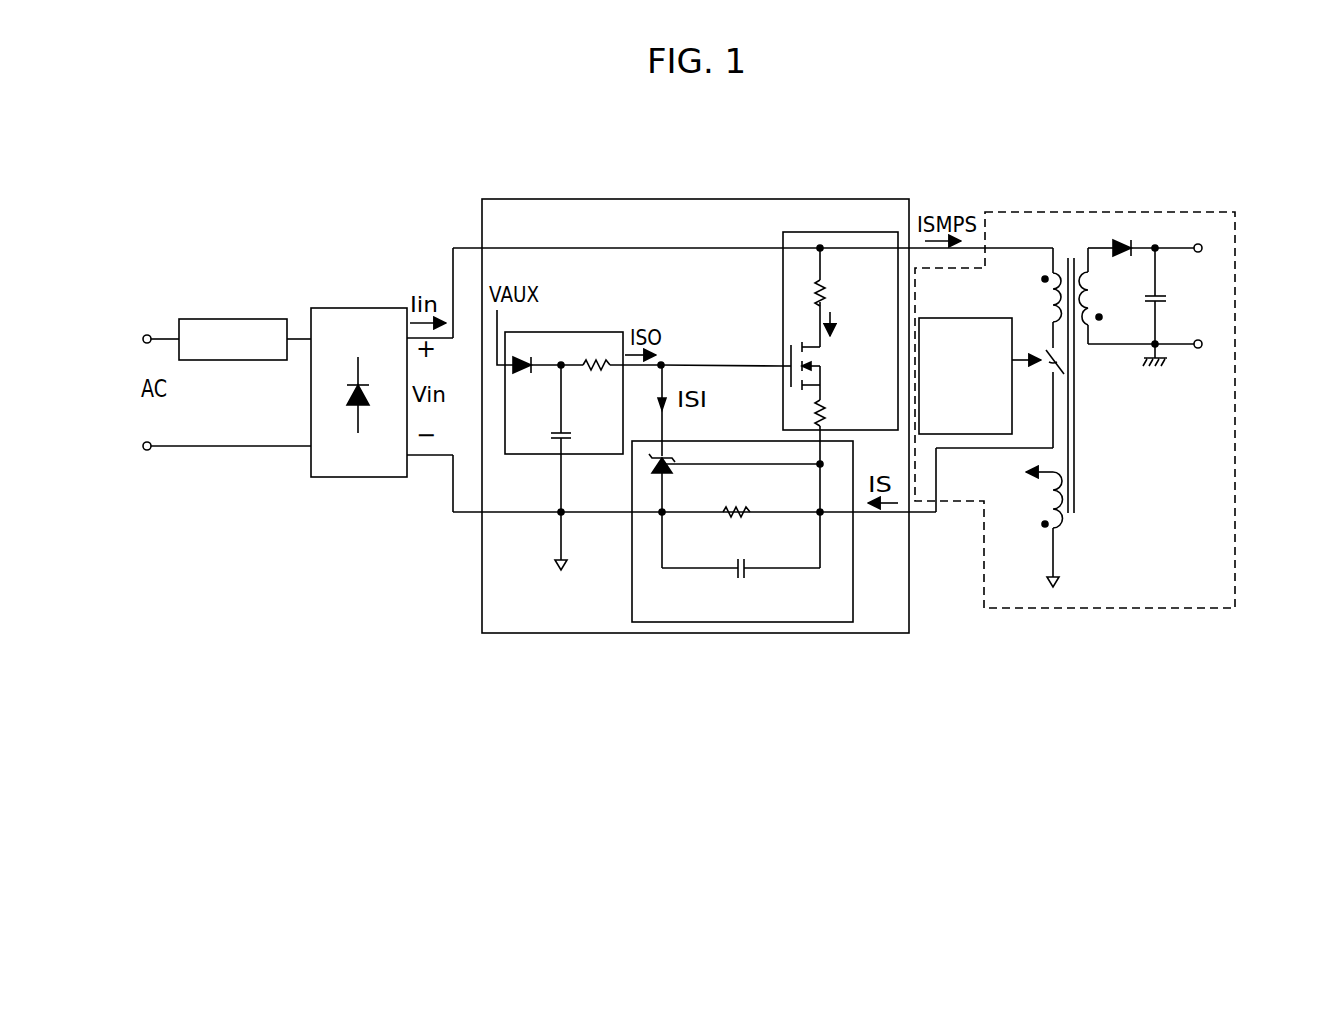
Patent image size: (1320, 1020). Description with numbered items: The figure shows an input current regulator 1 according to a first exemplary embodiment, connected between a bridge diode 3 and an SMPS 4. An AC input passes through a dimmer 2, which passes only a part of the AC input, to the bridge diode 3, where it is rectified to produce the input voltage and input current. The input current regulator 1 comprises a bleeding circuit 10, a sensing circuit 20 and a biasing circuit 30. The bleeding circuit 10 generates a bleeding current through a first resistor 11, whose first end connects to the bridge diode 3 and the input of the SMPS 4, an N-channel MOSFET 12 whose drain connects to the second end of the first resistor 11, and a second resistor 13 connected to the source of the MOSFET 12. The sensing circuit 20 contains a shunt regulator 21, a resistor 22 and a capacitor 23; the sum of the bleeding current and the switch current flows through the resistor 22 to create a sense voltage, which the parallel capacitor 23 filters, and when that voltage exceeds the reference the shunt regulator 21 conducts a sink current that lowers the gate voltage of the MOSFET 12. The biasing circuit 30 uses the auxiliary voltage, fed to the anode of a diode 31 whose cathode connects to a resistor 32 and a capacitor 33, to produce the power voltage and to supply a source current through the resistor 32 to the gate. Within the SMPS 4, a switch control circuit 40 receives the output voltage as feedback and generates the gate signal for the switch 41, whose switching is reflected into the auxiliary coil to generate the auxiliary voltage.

The input current regulator 1 is at (745, 199).
The dimmer 2 is at (255, 319).
The bridge diode 3 is at (375, 308).
The SMPS 4 is at (1075, 390).
The bleeding circuit 10 is at (816, 331).
The first resistor 11 is at (835, 294).
The MOSFET 12 is at (819, 371).
The second resistor 13 is at (835, 414).
The sensing circuit 20 is at (719, 531).
The shunt regulator 21 is at (734, 511).
The resistor 22 is at (738, 527).
The capacitor 23 is at (741, 586).
The biasing circuit 30 is at (583, 430).
The diode 31 is at (546, 382).
The resistor 32 is at (622, 379).
The capacitor 33 is at (576, 467).
The switch control circuit 40 is at (965, 318).
The switch 41 is at (1050, 374).